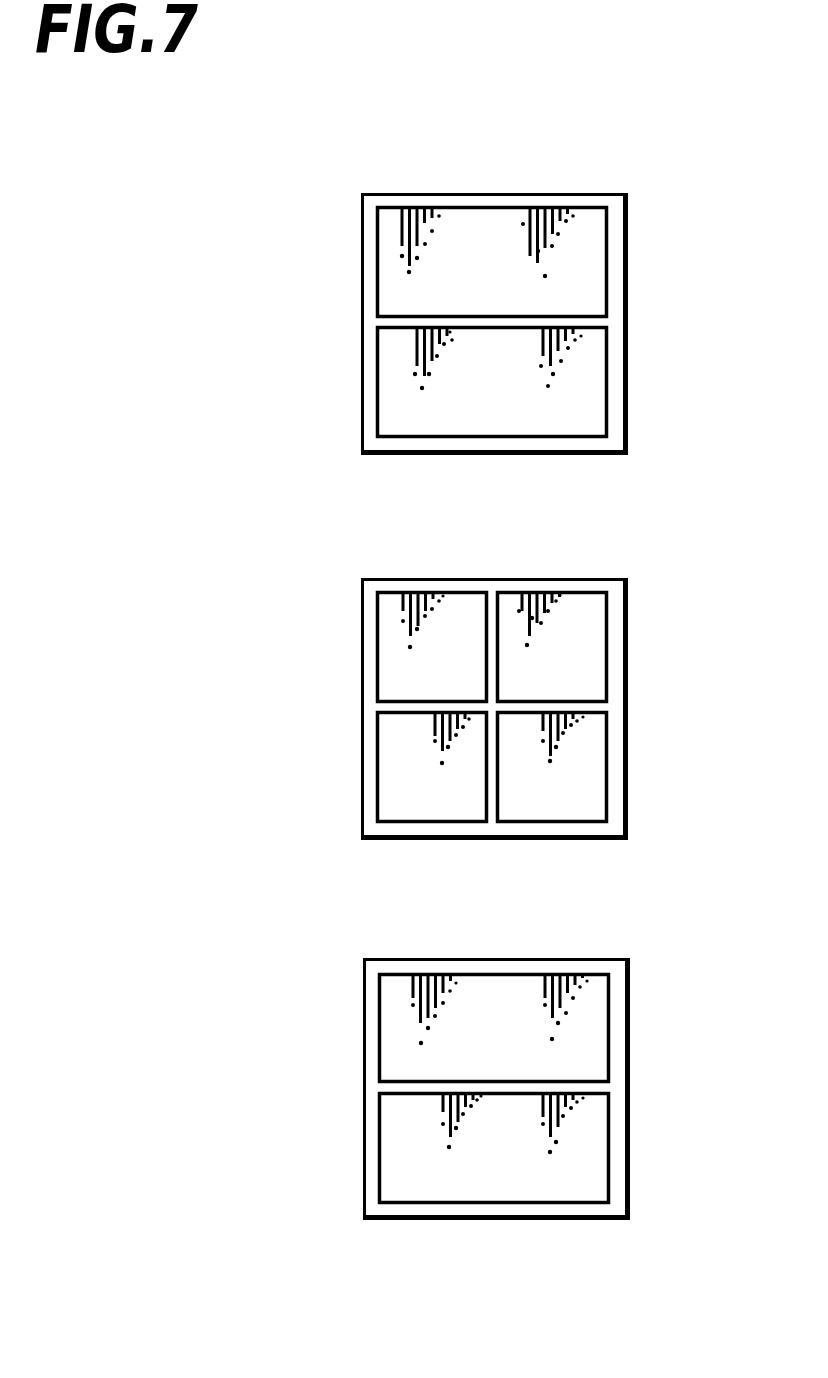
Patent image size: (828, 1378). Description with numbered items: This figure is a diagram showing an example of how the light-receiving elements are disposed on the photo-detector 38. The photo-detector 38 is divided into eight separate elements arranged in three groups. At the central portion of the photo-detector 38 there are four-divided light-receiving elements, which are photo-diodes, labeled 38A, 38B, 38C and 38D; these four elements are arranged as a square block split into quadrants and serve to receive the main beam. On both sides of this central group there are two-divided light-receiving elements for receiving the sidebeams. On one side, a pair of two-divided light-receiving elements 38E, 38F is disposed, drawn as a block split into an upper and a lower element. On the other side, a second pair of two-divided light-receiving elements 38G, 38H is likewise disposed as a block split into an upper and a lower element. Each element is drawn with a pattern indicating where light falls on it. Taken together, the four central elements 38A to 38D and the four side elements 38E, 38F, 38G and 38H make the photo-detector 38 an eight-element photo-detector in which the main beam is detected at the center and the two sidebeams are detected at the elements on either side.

The photo-detector 38 is at (436, 1342).
The light-receiving element 38A is at (390, 645).
The light-receiving element 38B is at (390, 753).
The light-receiving element 38C is at (590, 758).
The light-receiving element 38D is at (590, 643).
The light-receiving element 38E is at (390, 279).
The light-receiving element 38F is at (390, 384).
The light-receiving element 38G is at (395, 1030).
The light-receiving element 38H is at (395, 1138).